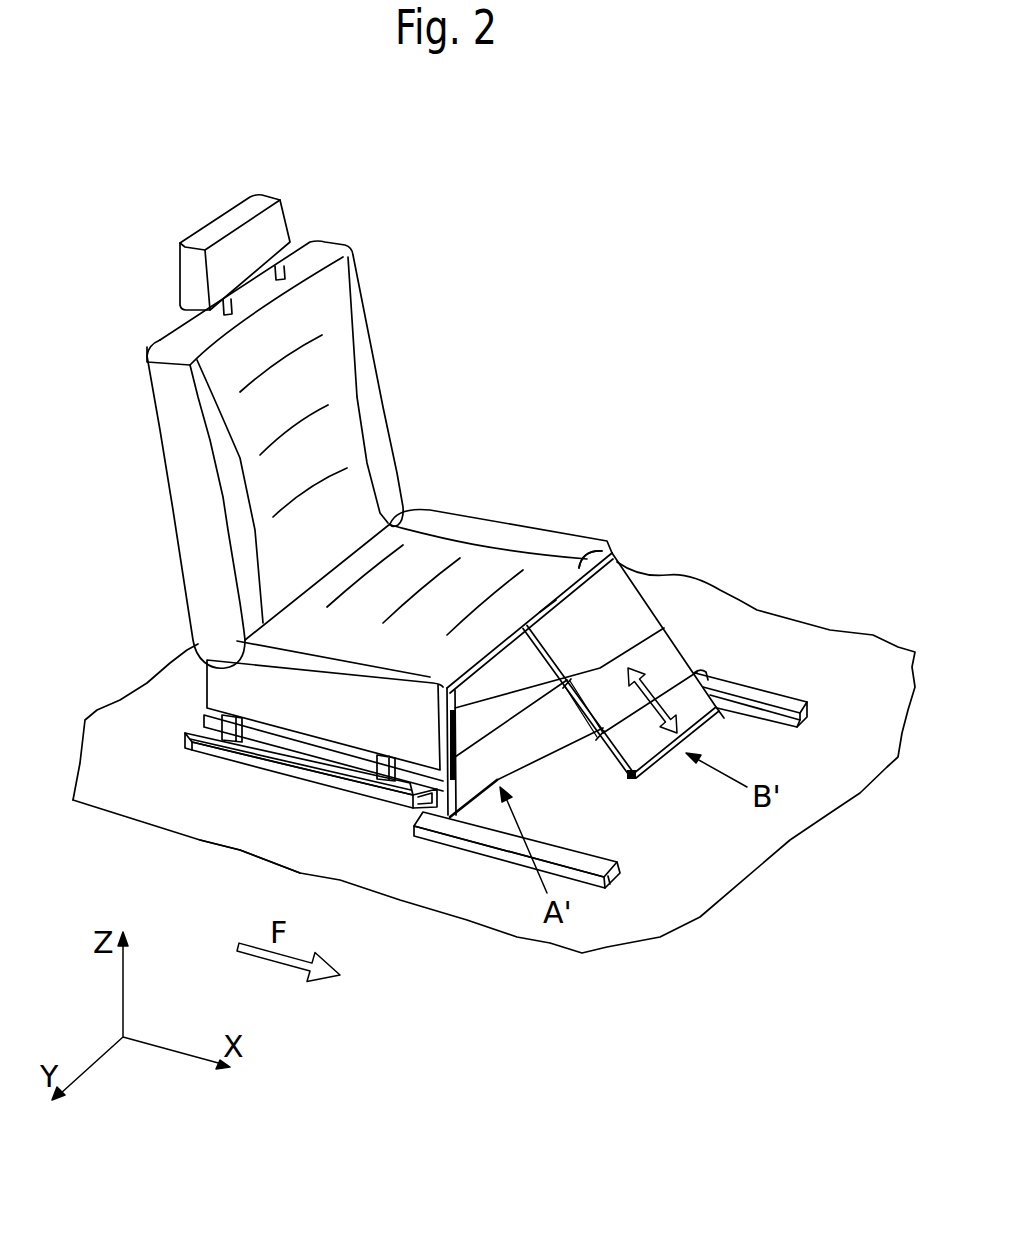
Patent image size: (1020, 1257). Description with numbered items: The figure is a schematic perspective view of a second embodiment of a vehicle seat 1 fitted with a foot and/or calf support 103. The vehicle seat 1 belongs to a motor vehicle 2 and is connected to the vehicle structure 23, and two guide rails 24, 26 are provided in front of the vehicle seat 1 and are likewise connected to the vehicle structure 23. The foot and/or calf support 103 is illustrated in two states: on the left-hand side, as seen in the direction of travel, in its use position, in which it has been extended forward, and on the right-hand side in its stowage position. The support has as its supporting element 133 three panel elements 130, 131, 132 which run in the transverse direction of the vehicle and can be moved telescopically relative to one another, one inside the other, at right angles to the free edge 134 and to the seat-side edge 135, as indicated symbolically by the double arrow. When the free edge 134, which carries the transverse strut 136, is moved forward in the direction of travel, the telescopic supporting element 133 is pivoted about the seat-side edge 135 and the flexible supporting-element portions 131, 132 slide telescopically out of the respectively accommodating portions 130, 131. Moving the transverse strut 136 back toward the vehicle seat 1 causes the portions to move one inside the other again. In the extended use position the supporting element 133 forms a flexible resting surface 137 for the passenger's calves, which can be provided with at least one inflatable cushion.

The vehicle seat 1 is at (570, 338).
The motor vehicle 2 is at (98, 832).
The vehicle structure 23 is at (254, 852).
The guide rail 24 is at (797, 690).
The guide rail 26 is at (595, 877).
The foot and/or calf support 103 is at (663, 605).
The panel element 130 is at (627, 598).
The panel element 131 is at (677, 638).
The panel element 132 is at (695, 672).
The supporting element 133 is at (597, 595).
The free edge 134 is at (648, 768).
The seat-side edge 135 is at (551, 600).
The transverse strut 136 is at (717, 710).
The resting surface 137 is at (621, 768).